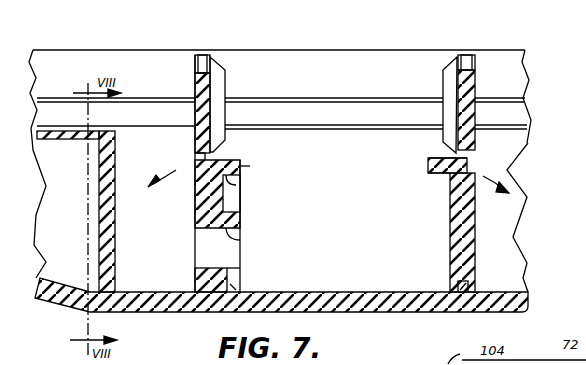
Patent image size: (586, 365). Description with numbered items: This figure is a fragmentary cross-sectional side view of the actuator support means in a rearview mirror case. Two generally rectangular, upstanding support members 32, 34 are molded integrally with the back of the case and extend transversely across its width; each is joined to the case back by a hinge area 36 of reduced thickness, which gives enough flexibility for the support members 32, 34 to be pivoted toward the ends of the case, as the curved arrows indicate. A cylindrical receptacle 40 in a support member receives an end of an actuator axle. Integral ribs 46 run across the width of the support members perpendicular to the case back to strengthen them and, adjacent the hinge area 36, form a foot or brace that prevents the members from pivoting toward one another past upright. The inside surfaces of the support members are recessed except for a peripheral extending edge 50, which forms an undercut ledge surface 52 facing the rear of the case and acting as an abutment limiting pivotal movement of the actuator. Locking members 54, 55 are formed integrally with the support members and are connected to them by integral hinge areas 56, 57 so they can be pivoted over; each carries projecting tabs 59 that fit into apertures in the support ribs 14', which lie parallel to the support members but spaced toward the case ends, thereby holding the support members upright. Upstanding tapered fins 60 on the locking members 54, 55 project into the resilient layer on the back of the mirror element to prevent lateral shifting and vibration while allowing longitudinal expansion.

The support rib 14' is at (126, 211).
The support member 32 is at (245, 168).
The support member 34 is at (430, 160).
The hinge area 36 is at (466, 284).
The receptacle 40 is at (238, 240).
The rib 46 is at (232, 285).
The peripheral extending edge 50 is at (236, 164).
The undercut ledge surface 52 is at (236, 185).
The locking member 54 is at (196, 80).
The locking member 55 is at (476, 82).
The hinge area 56 is at (196, 157).
The hinge area 57 is at (476, 165).
The projecting tab 59 is at (203, 62).
The tapered fin 60 is at (218, 79).